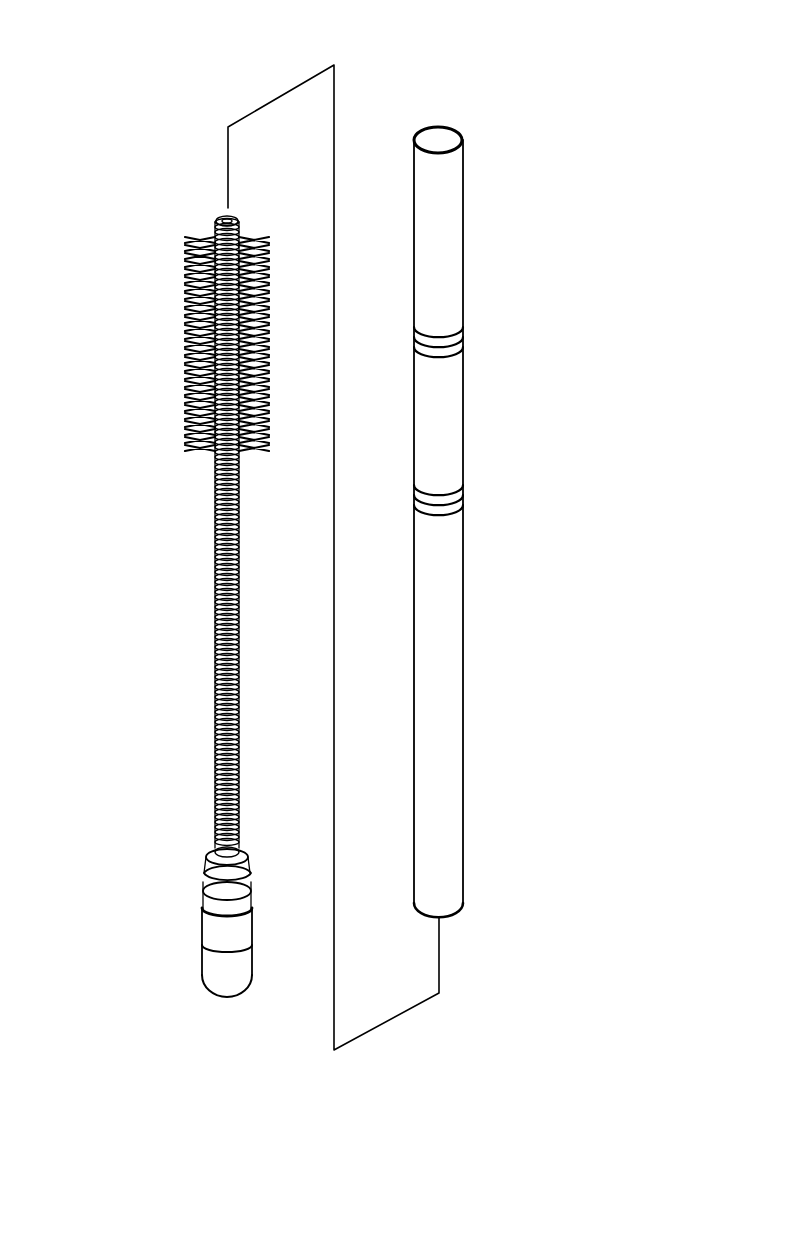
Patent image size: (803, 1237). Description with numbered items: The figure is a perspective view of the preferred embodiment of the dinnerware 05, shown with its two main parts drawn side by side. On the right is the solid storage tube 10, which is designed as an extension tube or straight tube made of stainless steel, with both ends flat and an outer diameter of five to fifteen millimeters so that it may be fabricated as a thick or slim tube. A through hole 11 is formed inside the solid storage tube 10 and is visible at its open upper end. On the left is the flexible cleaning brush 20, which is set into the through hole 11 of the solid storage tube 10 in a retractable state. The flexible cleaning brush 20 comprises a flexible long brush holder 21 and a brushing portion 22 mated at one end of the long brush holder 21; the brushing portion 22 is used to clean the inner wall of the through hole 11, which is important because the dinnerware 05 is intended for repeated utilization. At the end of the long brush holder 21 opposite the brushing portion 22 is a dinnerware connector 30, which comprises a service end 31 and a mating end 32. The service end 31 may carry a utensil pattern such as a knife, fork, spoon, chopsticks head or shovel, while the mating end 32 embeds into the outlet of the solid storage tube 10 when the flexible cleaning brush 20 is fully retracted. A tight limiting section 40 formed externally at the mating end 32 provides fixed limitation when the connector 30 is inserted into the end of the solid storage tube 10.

The dinnerware 05 is at (569, 472).
The solid storage tube 10 is at (463, 592).
The through hole 11 is at (450, 128).
The flexible cleaning brush 20 is at (205, 712).
The long brush holder 21 is at (218, 633).
The brushing portion 22 is at (188, 385).
The dinnerware connector 30 is at (187, 916).
The service end 31 is at (204, 986).
The mating end 32 is at (183, 896).
The tight limiting section 40 is at (240, 867).